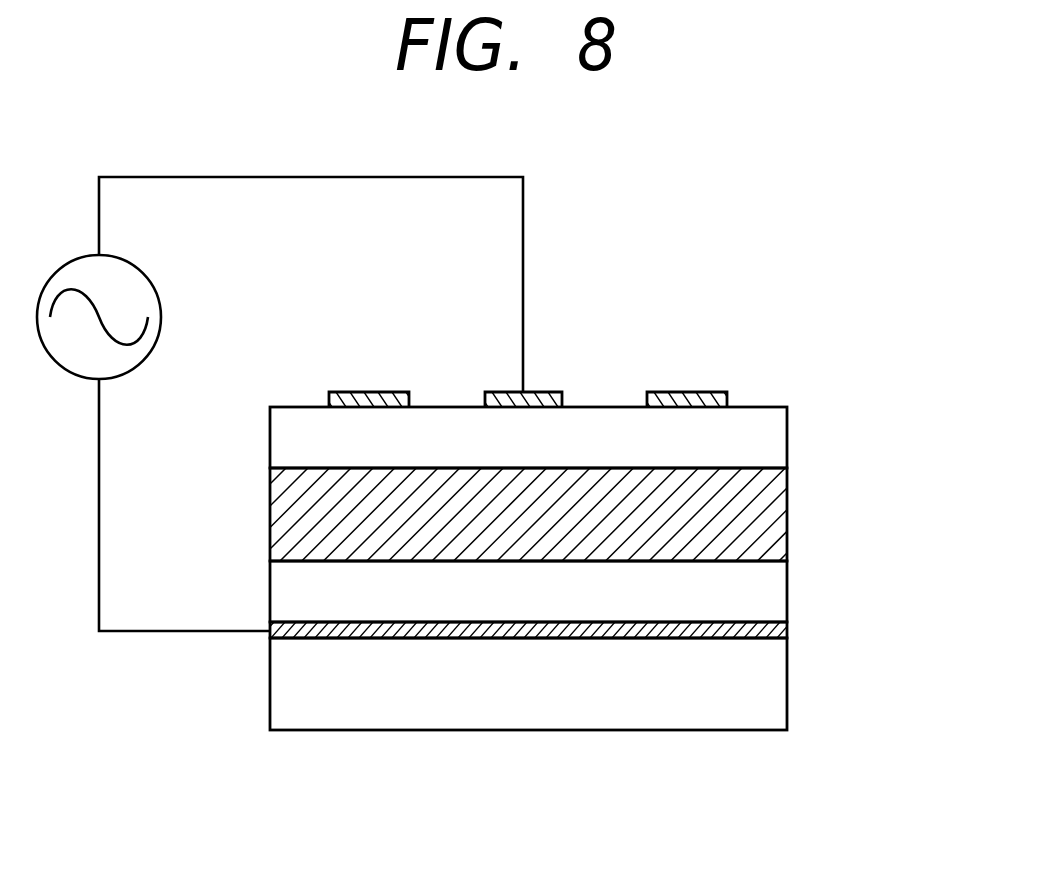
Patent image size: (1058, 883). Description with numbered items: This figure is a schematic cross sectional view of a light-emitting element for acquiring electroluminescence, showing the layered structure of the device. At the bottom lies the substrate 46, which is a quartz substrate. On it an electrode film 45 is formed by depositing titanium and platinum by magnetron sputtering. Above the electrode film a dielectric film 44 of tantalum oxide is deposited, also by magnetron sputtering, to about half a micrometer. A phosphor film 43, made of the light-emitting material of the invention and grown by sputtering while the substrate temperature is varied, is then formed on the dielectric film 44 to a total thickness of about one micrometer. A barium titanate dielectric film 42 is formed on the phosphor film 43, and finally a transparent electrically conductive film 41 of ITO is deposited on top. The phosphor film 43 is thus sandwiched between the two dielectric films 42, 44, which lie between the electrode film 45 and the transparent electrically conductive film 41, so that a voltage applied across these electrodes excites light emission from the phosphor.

The transparent electrically conductive film 41 is at (547, 392).
The dielectric film 42 is at (763, 437).
The phosphor film 43 is at (775, 510).
The dielectric film 44 is at (768, 587).
The electrode film 45 is at (790, 628).
The substrate 46 is at (576, 712).